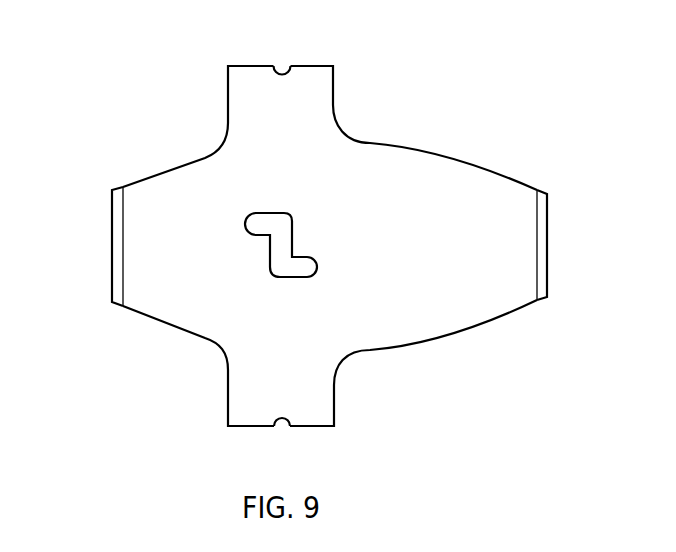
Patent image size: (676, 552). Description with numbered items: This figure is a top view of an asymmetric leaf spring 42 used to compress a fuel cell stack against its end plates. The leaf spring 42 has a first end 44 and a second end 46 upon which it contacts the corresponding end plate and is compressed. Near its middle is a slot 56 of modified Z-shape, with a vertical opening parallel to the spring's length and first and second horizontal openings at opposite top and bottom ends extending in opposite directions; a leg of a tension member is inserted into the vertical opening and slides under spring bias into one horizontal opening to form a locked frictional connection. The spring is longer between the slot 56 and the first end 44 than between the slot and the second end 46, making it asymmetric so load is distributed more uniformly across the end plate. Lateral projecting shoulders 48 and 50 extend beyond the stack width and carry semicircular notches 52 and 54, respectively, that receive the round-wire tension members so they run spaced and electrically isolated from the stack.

The asymmetric leaf spring 42 is at (478, 103).
The first end 44 is at (547, 245).
The second end 46 is at (112, 239).
The shoulder 48 is at (247, 427).
The shoulder 50 is at (316, 63).
The semicircular notch 52 is at (282, 427).
The semicircular notch 54 is at (283, 63).
The slot 56 is at (263, 218).